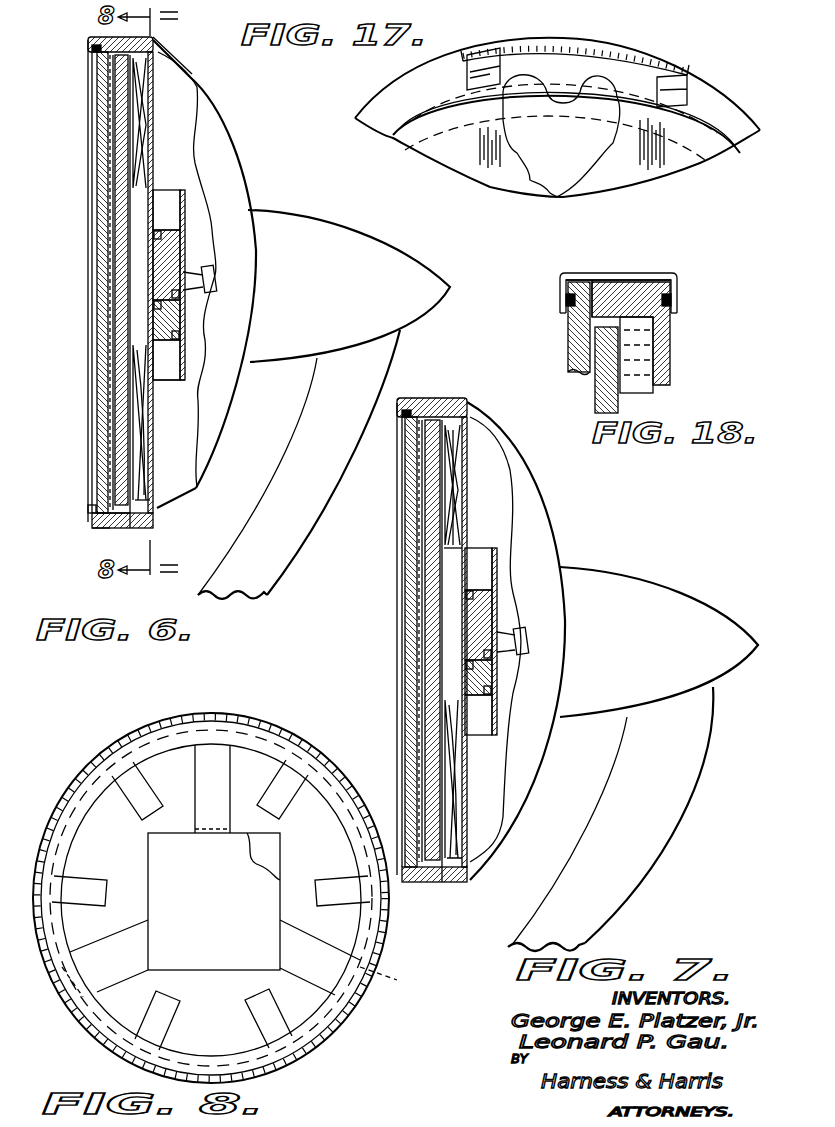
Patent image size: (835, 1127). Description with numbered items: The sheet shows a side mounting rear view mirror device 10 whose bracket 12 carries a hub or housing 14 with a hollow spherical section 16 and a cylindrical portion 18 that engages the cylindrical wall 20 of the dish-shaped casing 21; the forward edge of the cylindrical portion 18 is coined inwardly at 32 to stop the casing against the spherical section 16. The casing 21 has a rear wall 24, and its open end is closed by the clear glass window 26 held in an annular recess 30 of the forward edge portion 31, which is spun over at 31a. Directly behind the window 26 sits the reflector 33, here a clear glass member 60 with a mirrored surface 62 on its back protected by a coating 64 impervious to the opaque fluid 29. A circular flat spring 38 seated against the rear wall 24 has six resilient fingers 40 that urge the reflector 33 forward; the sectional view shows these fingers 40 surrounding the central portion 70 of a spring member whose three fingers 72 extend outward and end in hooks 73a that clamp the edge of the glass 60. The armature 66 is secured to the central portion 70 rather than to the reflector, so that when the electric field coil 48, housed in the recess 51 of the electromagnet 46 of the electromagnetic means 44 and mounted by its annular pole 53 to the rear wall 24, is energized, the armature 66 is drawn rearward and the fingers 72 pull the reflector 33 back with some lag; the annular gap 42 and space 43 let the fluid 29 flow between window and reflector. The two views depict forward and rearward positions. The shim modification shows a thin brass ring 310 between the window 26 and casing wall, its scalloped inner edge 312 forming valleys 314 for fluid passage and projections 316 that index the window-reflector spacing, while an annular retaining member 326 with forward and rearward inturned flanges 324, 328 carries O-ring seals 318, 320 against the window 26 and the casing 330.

In FIG. 6, the rear view mirror device 10 is at (300, 421).
In FIG. 7, the rear view mirror device 10 is at (592, 817).
In FIG. 6, the mounting bracket 12 is at (298, 447).
In FIG. 7, the mounting bracket 12 is at (618, 778).
In FIG. 6, the hub or housing 14 is at (268, 350).
In FIG. 7, the hub or housing 14 is at (605, 710).
In FIG. 6, the hollow spherical section 16 is at (228, 151).
In FIG. 7, the hollow spherical section 16 is at (542, 750).
In FIG. 6, the cylindrical portion 18 is at (96, 37).
In FIG. 7, the cylindrical portion 18 is at (430, 398).
In FIG. 6, the cylindrical wall 20 is at (155, 525).
In FIG. 7, the cylindrical wall 20 is at (456, 405).
In FIG. 6, the casing 21 is at (150, 462).
In FIG. 7, the casing 21 is at (462, 776).
In FIG. 6, the rear wall 24 is at (140, 152).
In FIG. 7, the rear wall 24 is at (465, 812).
In FIG. 6, the sealing glass or window 26 is at (97, 346).
In FIG. 7, the sealing glass or window 26 is at (408, 605).
In FIG. 18, the sealing glass or window 26 is at (568, 355).
In FIG. 7, the fluid 29 is at (420, 470).
In FIG. 18, the fluid 29 is at (650, 364).
In FIG. 6, the annular recess 30 is at (102, 528).
In FIG. 6, the forward edge portion 31 is at (108, 530).
In FIG. 6, the spun-over edge 31a is at (95, 518).
In FIG. 6, the inwardly coined forward edge 32 is at (90, 50).
In FIG. 6, the reflector 33 is at (108, 452).
In FIG. 7, the reflector 33 is at (445, 480).
In FIG. 18, the reflector 33 is at (612, 393).
In FIG. 6, the circular flat spring 38 is at (160, 505).
In FIG. 8, the circular flat spring 38 is at (280, 738).
In FIG. 6, the resilient fingers 40 is at (142, 436).
In FIG. 8, the resilient fingers 40 is at (283, 808).
In FIG. 6, the annular gap 42 is at (131, 530).
In FIG. 7, the annular gap 42 is at (443, 882).
In FIG. 18, the annular gap 42 is at (636, 290).
In FIG. 6, the space or chamber 43 is at (146, 420).
In FIG. 7, the space or chamber 43 is at (452, 852).
In FIG. 6, the electromagnetic means 44 is at (188, 210).
In FIG. 7, the electromagnetic means 44 is at (498, 566).
In FIG. 6, the electromagnet 46 is at (180, 265).
In FIG. 7, the electromagnet 46 is at (494, 612).
In FIG. 6, the electric field coil 48 is at (175, 322).
In FIG. 6, the recess 51 is at (170, 357).
In FIG. 6, the annular pole 53 is at (165, 386).
In FIG. 7, the clear glass member 60 is at (430, 555).
In FIG. 7, the mirrored surface 62 is at (455, 508).
In FIG. 7, the protective coating 64 is at (452, 520).
In FIG. 8, the protective coating 64 is at (260, 776).
In FIG. 7, the armature 66 is at (456, 565).
In FIG. 8, the armature 66 is at (270, 853).
In FIG. 8, the central portion 70 is at (224, 890).
In FIG. 6, the fingers 72 is at (140, 170).
In FIG. 8, the fingers 72 is at (110, 944).
In FIG. 8, the hooks 73a is at (58, 1008).
In FIG. 17, the thin ring 310 is at (610, 63).
In FIG. 18, the thin ring 310 is at (610, 300).
In FIG. 17, the scalloped inner edge 312 is at (560, 127).
In FIG. 18, the scalloped inner edge 312 is at (590, 328).
In FIG. 17, the valleys 314 is at (518, 82).
In FIG. 17, the projections or tabs 316 is at (558, 90).
In FIG. 18, the O-ring seal 318 is at (562, 298).
In FIG. 18, the O-ring seal 320 is at (680, 298).
In FIG. 18, the forward inturned flange 324 is at (562, 311).
In FIG. 18, the annular retaining member 326 is at (588, 273).
In FIG. 18, the rearward inturned flange 328 is at (680, 312).
In FIG. 18, the casing 330 is at (678, 285).